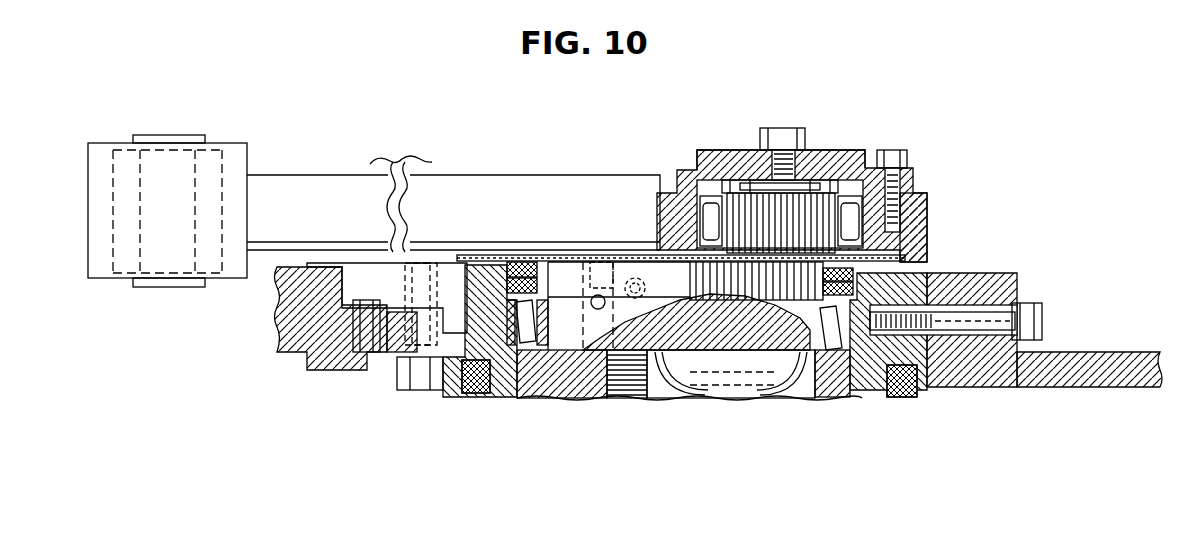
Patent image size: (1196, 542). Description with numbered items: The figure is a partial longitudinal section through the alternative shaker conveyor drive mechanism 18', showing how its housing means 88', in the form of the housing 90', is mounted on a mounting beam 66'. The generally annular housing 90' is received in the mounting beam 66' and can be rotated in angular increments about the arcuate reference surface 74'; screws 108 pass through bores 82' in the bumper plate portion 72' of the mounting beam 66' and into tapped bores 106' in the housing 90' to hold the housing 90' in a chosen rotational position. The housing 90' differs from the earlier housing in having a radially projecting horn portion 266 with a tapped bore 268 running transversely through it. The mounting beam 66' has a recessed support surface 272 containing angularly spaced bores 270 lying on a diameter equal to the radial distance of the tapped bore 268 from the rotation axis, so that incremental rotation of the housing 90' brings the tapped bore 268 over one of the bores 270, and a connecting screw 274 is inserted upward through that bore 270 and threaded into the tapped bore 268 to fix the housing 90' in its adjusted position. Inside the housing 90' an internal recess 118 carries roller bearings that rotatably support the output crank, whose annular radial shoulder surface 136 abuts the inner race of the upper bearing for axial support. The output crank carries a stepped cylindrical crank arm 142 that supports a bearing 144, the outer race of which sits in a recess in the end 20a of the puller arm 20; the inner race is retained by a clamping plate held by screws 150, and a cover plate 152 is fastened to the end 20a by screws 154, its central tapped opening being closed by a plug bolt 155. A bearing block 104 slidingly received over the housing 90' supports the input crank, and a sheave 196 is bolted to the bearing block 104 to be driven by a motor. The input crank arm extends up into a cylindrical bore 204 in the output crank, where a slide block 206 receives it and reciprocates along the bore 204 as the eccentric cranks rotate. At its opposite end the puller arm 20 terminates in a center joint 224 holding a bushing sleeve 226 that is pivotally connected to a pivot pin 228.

The drive mechanism means 18' is at (569, 396).
The puller arm 20 is at (309, 168).
The end of the puller arm 20a is at (925, 195).
The mounting beam 66' is at (1091, 344).
The bumper plate portion 72' is at (987, 299).
The clamp block 74' is at (895, 296).
The bores 82' is at (975, 303).
The shim plate 88' is at (681, 201).
The housing 90' is at (480, 255).
The bearing block 104 is at (923, 392).
The bolt 106' is at (942, 280).
The screws 108 is at (1045, 313).
The internal recess 118 is at (830, 397).
The annular radial shoulder surface 136 is at (561, 250).
The crank arm 142 is at (700, 225).
The bearing 144 is at (735, 218).
The screws 150 is at (822, 180).
The cover plate 152 is at (735, 158).
The screws 154 is at (897, 152).
The plug bolt 155 is at (782, 130).
The sheave 196 is at (512, 262).
The cylindrical bore 204 is at (691, 271).
The slide block 206 is at (660, 392).
The center joint 224 is at (238, 278).
The bushing sleeve 226 is at (133, 285).
The pivot pin 228 is at (815, 398).
The horn portion 266 is at (446, 262).
The tapped bore 268 is at (436, 270).
The bores 270 is at (365, 352).
The recessed support surface 272 is at (343, 328).
The connecting screw 274 is at (420, 378).